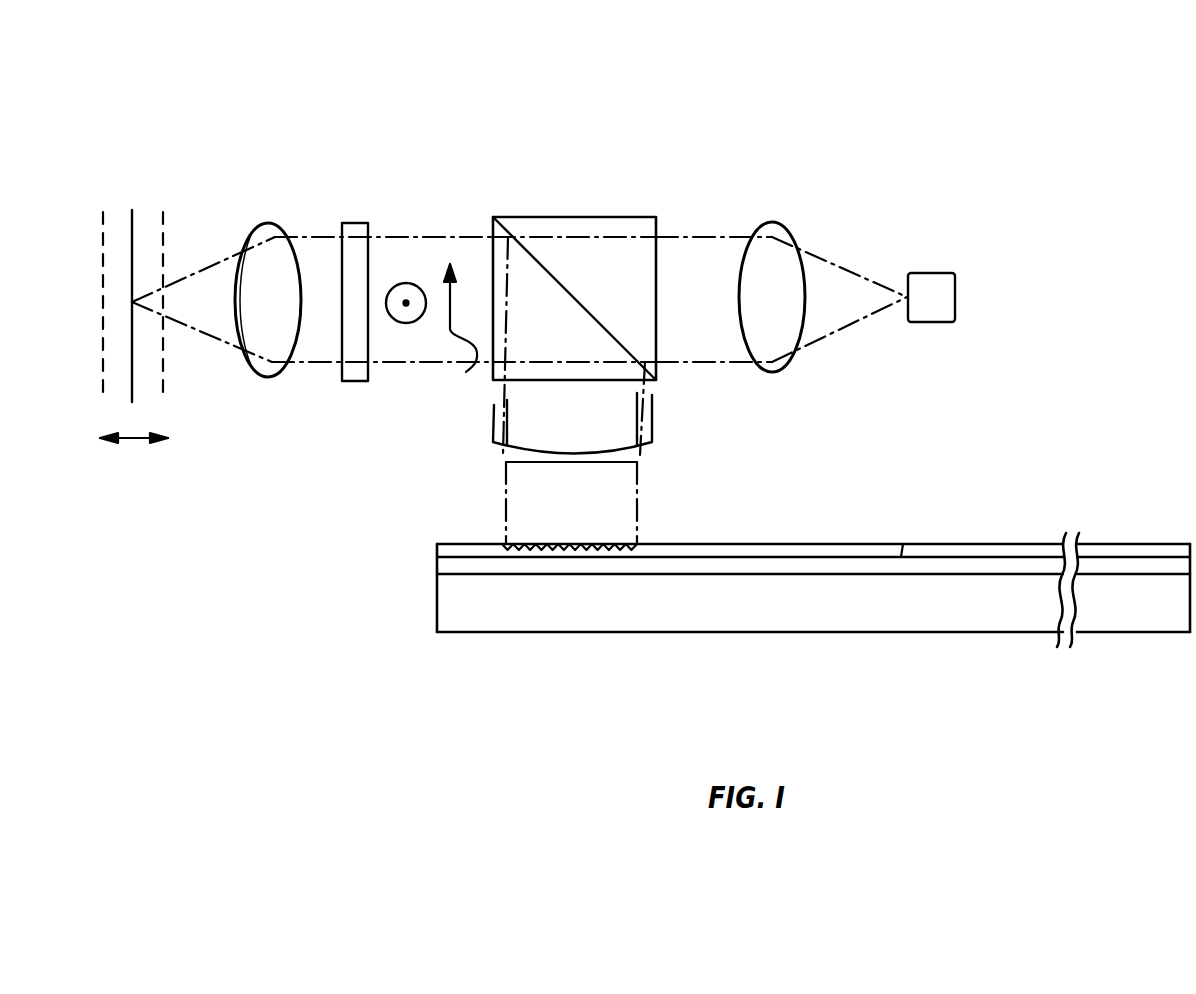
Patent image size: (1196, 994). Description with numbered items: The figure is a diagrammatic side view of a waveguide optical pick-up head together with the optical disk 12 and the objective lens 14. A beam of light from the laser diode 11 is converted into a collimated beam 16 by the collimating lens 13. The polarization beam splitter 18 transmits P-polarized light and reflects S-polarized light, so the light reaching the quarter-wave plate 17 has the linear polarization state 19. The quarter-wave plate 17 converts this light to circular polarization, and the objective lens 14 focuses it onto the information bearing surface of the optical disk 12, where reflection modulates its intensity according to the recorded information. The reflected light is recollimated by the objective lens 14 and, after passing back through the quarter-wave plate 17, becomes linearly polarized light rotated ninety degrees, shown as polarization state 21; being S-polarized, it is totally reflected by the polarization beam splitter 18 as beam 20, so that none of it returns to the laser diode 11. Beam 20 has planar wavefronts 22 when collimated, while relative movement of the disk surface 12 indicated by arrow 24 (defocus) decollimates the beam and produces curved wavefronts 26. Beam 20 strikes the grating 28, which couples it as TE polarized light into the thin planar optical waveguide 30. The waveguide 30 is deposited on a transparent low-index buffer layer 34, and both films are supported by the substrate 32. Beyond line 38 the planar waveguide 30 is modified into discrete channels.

The laser diode 11 is at (938, 273).
The optical disk 12 is at (132, 213).
The collimating lens 13 is at (780, 222).
The objective lens 14 is at (275, 370).
The collimated beam 16 is at (697, 237).
The quarter-wave plate 17 is at (350, 223).
The polarization beam splitter 18 is at (578, 217).
The linear polarization state 19 is at (454, 330).
The beam 20 is at (640, 418).
The polarization state 21 is at (392, 284).
The planar wavefronts 22 is at (595, 462).
The arrow 24 is at (134, 440).
The curved wavefronts 26 is at (565, 462).
The grating 28 is at (570, 550).
The planar optical waveguide 30 is at (783, 544).
The substrate 32 is at (1110, 632).
The buffer layer 34 is at (972, 564).
The line 38 is at (918, 514).